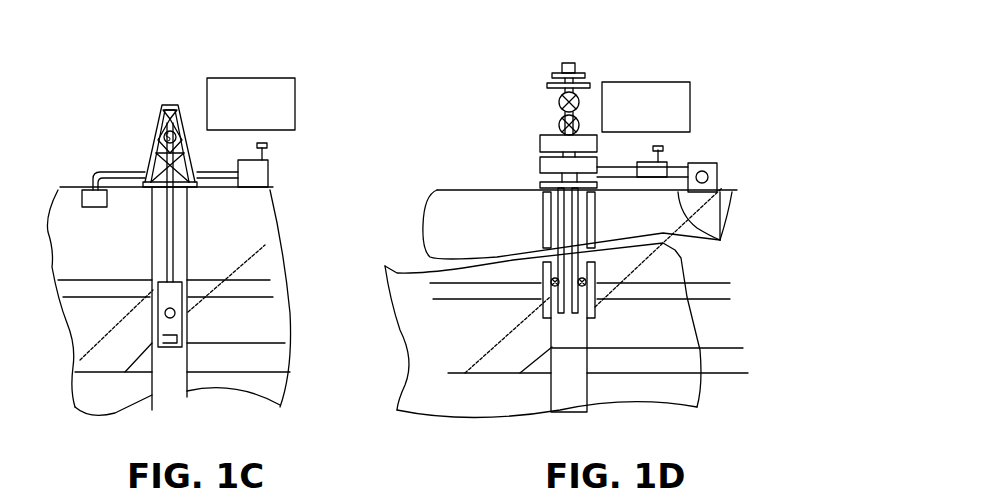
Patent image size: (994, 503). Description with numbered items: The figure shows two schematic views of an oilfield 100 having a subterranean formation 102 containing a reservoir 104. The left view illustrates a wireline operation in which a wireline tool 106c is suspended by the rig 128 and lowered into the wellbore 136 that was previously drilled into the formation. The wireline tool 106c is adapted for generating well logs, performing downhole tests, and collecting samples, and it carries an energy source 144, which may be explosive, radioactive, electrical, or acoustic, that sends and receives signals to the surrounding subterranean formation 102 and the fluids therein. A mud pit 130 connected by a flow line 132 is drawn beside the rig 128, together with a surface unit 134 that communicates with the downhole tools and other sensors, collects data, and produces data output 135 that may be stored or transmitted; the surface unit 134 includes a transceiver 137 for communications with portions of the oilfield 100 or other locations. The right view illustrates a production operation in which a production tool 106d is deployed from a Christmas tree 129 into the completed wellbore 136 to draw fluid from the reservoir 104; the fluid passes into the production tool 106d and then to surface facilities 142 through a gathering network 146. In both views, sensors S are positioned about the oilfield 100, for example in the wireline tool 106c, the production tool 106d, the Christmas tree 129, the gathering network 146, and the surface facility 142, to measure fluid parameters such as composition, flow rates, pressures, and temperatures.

In FIG. 1C, the oilfield 100 is at (137, 108).
In FIG. 1D, the oilfield 100 is at (520, 140).
In FIG. 1C, the subterranean formation 102 is at (198, 288).
In FIG. 1D, the subterranean formation 102 is at (637, 262).
In FIG. 1C, the reservoir 104 is at (248, 330).
In FIG. 1D, the reservoir 104 is at (671, 338).
In FIG. 1C, the wireline tool 106c is at (152, 313).
In FIG. 1D, the production tool 106d is at (556, 296).
In FIG. 1C, the rig 128 is at (149, 132).
In FIG. 1D, the Christmas tree 129 is at (578, 66).
In FIG. 1C, the mud pit 130 is at (93, 208).
In FIG. 1C, the flow line 132 is at (92, 173).
In FIG. 1C, the surface unit 134 is at (269, 177).
In FIG. 1D, the surface unit 134 is at (643, 162).
In FIG. 1C, the data output 135 is at (247, 77).
In FIG. 1D, the data output 135 is at (691, 106).
In FIG. 1C, the wellbore 136 is at (190, 222).
In FIG. 1D, the wellbore 136 is at (578, 224).
In FIG. 1C, the transceiver 137 is at (268, 150).
In FIG. 1D, the transceiver 137 is at (663, 156).
In FIG. 1D, the surface facilities 142 is at (733, 156).
In FIG. 1C, the energy source 144 is at (177, 339).
In FIG. 1C, the gathering network 146 is at (168, 301).
In FIG. 1D, the gathering network 146 is at (722, 222).
In FIG. 1D, the sensor S is at (706, 172).